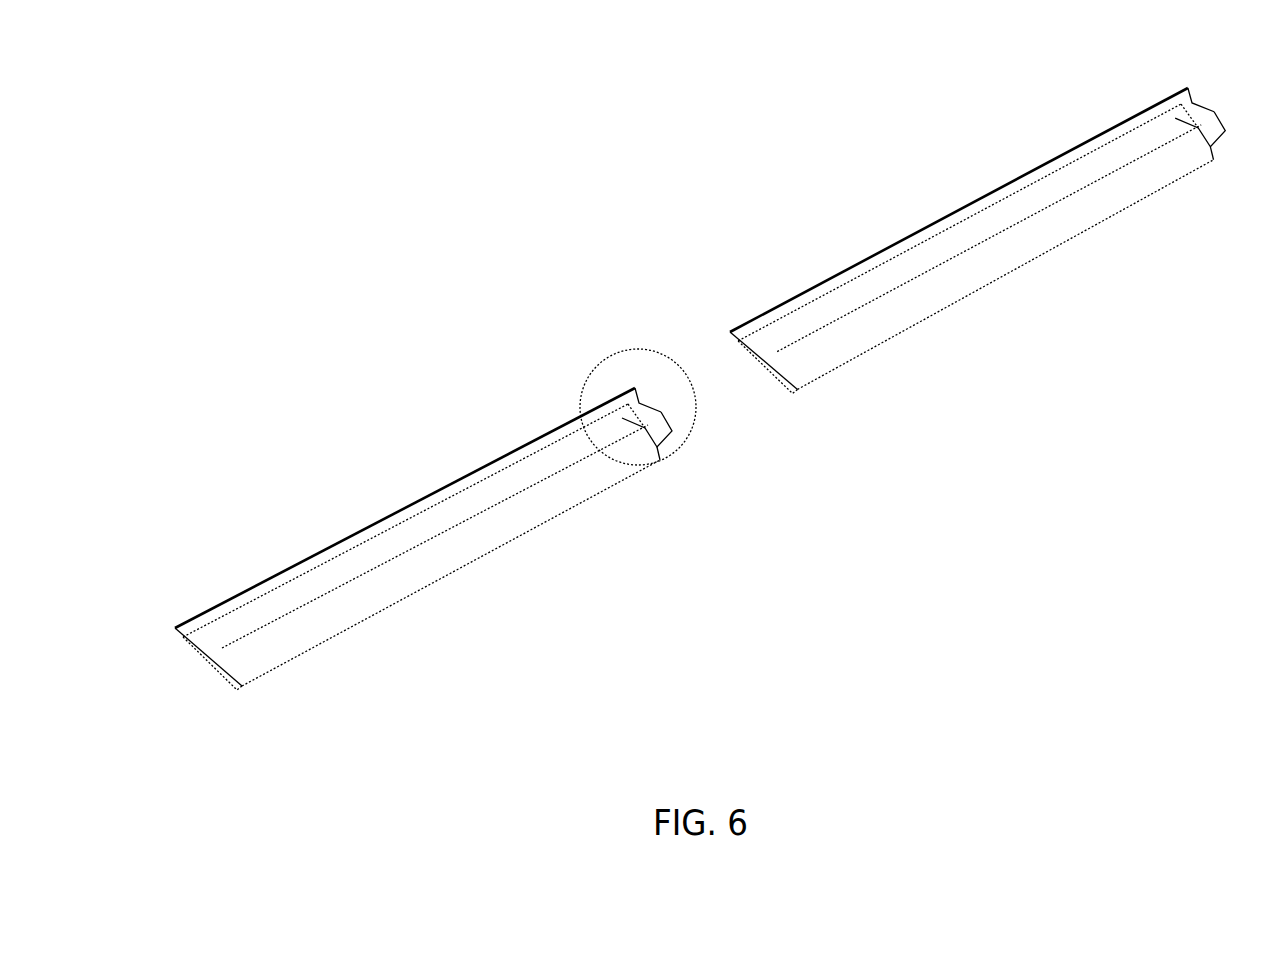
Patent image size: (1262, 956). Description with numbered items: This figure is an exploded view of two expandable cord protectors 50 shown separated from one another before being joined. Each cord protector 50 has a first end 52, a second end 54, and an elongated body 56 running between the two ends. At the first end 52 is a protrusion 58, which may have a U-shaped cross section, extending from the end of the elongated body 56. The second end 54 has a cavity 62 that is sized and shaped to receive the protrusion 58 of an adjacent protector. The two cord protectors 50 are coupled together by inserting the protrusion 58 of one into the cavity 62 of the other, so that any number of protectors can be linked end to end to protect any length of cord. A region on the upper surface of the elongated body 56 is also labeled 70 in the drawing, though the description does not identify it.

The expandable cord protector 50 is at (700, 366).
The first end 52 is at (645, 455).
The second end 54 is at (212, 637).
The elongated body 56 is at (424, 525).
The protrusion 58 is at (635, 388).
The cavity 62 is at (210, 652).
The upper wall 70 is at (537, 448).